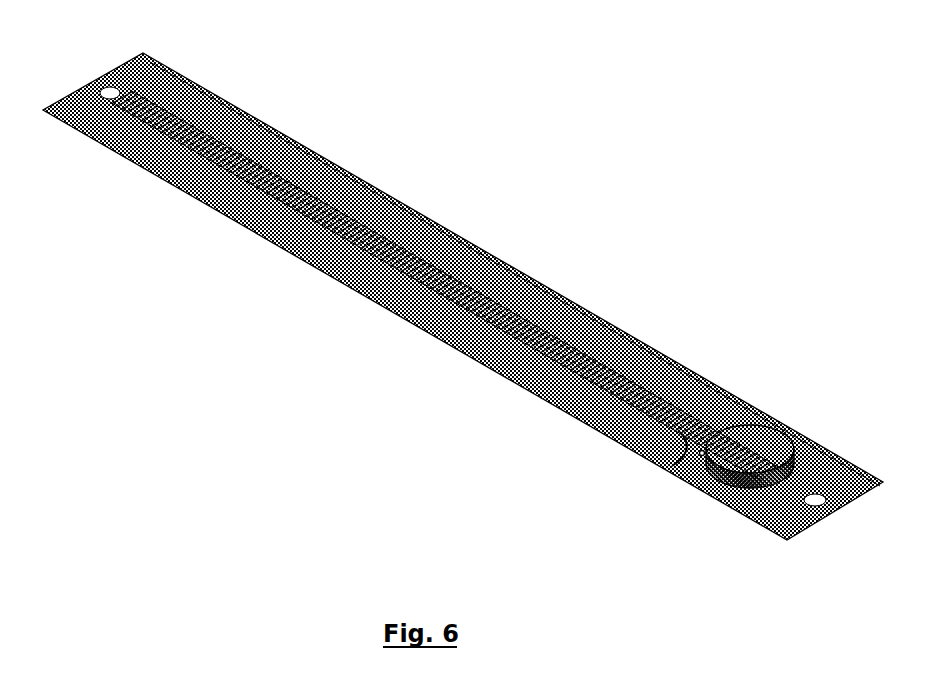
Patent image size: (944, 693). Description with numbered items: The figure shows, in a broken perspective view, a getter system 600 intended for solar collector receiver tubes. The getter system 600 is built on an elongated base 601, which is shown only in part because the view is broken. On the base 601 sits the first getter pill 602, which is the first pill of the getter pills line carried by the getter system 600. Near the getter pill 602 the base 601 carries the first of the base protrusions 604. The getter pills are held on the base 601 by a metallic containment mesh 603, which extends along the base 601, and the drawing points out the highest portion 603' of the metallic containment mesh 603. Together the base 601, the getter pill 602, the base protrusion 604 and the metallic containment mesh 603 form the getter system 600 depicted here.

The getter system 600 is at (461, 339).
The base 601 is at (73, 113).
The first getter pill 602 is at (783, 478).
The metallic containment mesh 603 is at (445, 285).
The highest portion of the metallic containment mesh 603' is at (567, 474).
The first base protrusion 604 is at (702, 456).